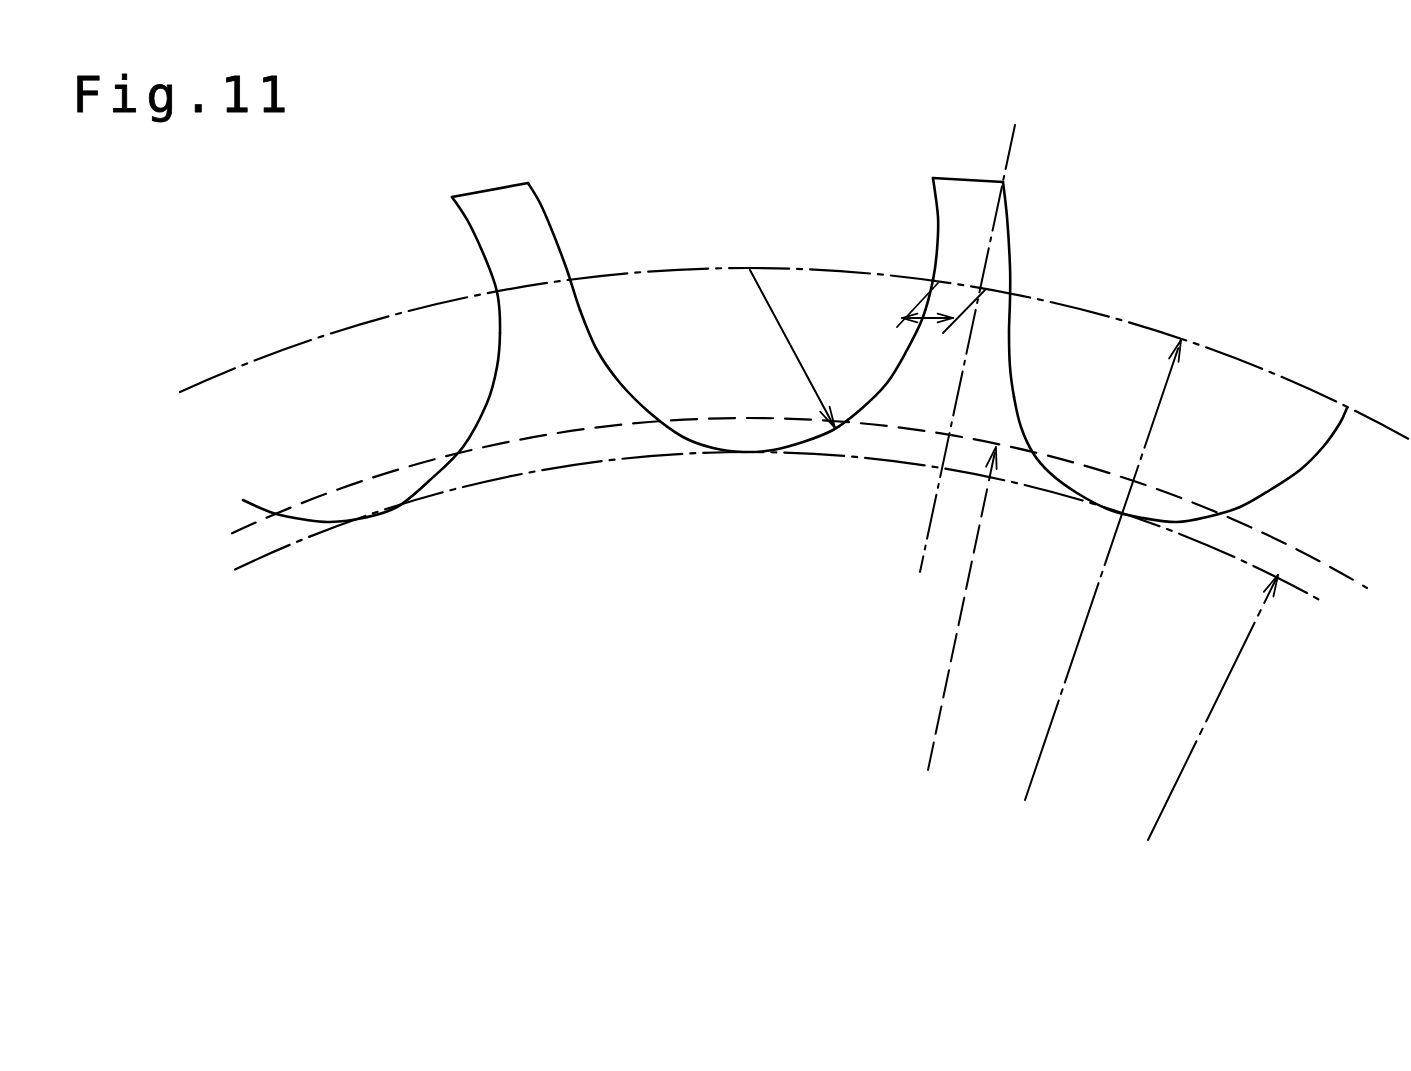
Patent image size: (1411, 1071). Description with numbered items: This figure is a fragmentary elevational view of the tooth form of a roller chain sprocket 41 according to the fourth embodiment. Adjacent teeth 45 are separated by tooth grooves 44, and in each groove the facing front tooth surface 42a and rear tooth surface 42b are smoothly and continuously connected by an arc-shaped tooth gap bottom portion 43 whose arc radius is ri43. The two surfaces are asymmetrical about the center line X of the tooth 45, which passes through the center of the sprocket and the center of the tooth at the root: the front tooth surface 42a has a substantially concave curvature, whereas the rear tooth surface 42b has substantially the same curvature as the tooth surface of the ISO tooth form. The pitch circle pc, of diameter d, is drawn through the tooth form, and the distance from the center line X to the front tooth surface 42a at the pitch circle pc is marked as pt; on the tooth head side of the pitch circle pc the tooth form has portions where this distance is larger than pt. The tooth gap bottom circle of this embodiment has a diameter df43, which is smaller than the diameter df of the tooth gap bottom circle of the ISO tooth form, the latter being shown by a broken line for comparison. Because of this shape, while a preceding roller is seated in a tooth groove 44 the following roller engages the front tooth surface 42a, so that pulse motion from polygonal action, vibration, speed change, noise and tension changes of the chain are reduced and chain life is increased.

The sprocket 41 is at (892, 655).
The front tooth surface 42a is at (468, 223).
The rear tooth surface 42b is at (548, 200).
The tooth gap bottom portion 43 is at (352, 520).
The tooth groove 44 is at (676, 305).
The tooth 45 is at (495, 181).
The pitch circle pc is at (1262, 365).
The center line of the tooth X is at (971, 335).
The pitch circle diameter d is at (1099, 586).
The diameter of the tooth gap bottom circle (ISO tooth form) df is at (950, 625).
The diameter of the tooth gap bottom circle df43 is at (1191, 725).
The arc radius of the tooth gap bottom portion ri43 is at (790, 350).
The distance from the center line to the front tooth surface at the pitch circle pt is at (912, 330).